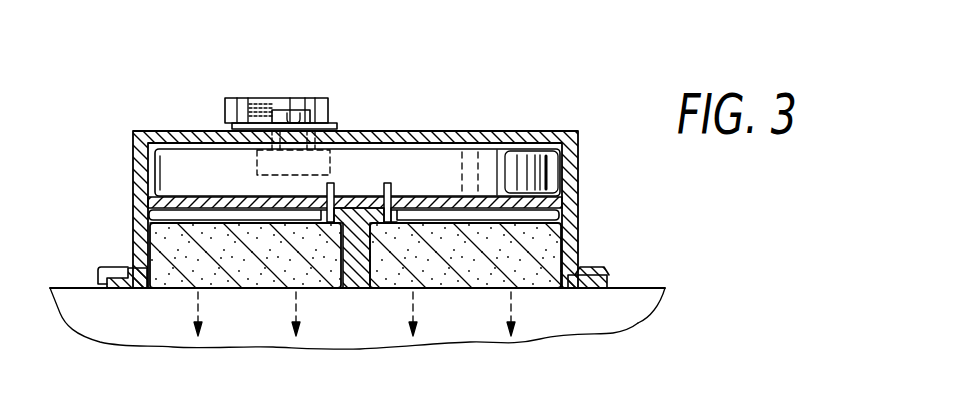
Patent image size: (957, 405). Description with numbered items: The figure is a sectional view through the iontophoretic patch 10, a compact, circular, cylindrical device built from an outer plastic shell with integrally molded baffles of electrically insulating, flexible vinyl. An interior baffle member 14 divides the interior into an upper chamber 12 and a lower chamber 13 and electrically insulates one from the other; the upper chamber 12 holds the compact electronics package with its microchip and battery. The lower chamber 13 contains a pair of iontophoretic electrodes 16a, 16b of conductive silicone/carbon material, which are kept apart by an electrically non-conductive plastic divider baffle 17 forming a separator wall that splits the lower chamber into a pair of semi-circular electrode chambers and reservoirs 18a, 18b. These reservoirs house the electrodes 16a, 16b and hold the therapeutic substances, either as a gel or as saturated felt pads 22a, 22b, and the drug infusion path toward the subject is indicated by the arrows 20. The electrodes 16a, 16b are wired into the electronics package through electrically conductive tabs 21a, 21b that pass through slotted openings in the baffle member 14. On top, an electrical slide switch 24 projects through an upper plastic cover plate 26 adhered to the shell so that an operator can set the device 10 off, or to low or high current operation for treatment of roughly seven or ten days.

The iontophoretic patch 10 is at (413, 74).
The upper chamber 12 is at (488, 160).
The lower chamber 13 is at (396, 213).
The interior baffle member 14 is at (565, 205).
The iontophoretic electrode 16a is at (216, 214).
The iontophoretic electrode 16b is at (492, 210).
The divider baffle 17 is at (347, 255).
The electrode chamber and reservoir 18a is at (165, 259).
The electrode chamber and reservoir 18b is at (548, 240).
The arrows 20 is at (290, 278).
The electrically conductive tab 21a is at (336, 182).
The electrically conductive tab 21b is at (395, 182).
The felt pad 22a is at (165, 231).
The felt pad 22b is at (550, 288).
The electrical slide switch 24 is at (285, 127).
The upper plastic cover plate 26 is at (541, 131).